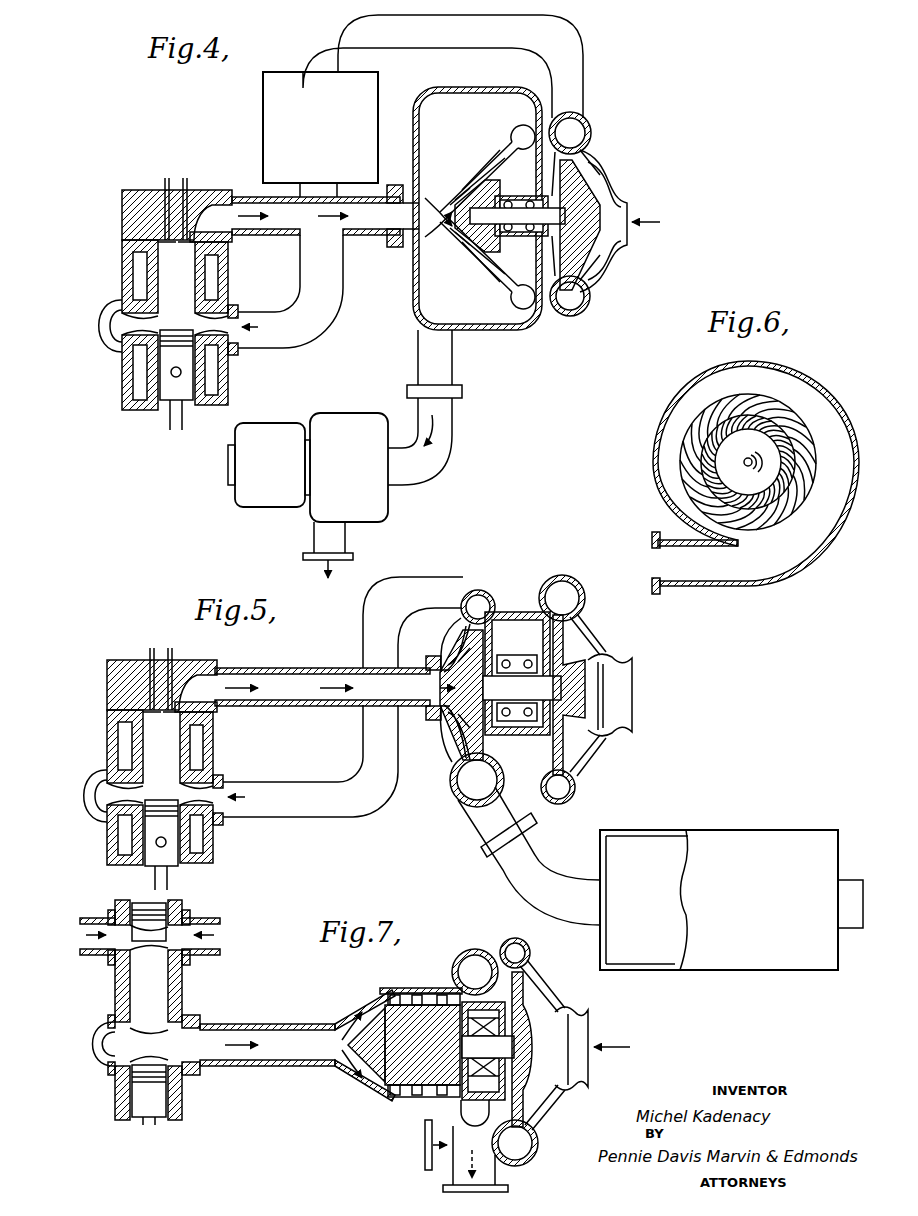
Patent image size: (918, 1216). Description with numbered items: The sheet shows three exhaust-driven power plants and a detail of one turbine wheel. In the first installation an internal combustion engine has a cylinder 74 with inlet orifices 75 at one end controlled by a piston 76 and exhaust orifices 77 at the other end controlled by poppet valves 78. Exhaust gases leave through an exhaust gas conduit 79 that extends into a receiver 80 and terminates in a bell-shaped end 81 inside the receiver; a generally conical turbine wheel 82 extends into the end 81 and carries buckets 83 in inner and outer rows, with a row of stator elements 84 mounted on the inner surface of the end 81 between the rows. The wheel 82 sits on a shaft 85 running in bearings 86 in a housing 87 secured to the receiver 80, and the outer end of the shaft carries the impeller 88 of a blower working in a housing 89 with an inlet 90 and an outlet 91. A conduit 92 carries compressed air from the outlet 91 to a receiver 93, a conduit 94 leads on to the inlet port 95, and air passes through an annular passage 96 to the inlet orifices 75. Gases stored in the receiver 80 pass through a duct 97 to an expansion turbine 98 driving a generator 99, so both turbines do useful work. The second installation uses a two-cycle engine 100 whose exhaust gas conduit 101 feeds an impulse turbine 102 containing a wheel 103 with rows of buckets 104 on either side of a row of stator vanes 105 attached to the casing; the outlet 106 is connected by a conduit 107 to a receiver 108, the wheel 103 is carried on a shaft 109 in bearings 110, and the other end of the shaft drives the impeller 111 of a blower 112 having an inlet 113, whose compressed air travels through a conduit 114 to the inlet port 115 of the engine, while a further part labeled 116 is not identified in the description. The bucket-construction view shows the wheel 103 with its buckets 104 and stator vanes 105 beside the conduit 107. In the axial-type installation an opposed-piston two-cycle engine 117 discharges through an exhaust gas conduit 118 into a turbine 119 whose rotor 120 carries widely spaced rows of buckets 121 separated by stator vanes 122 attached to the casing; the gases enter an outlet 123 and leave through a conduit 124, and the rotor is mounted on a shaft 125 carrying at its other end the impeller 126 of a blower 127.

In FIG. 4, the cylinder 74 is at (177, 303).
In FIG. 4, the inlet orifices 75 is at (140, 328).
In FIG. 4, the piston 76 is at (166, 395).
In FIG. 4, the exhaust orifices 77 is at (124, 222).
In FIG. 4, the poppet valves 78 is at (166, 183).
In FIG. 4, the exhaust gas conduit 79 is at (252, 206).
In FIG. 4, the receiver 80 is at (420, 298).
In FIG. 4, the bell-shaped end 81 is at (462, 198).
In FIG. 4, the turbine wheel 82 is at (470, 262).
In FIG. 4, the buckets 83 is at (478, 184).
In FIG. 4, the stator elements 84 is at (490, 168).
In FIG. 4, the shaft 85 is at (548, 258).
In FIG. 4, the bearings 86 is at (548, 212).
In FIG. 4, the housing 87 is at (575, 190).
In FIG. 4, the impeller 88 is at (600, 208).
In FIG. 4, the blower housing 89 is at (590, 275).
In FIG. 4, the inlet 90 is at (628, 238).
In FIG. 4, the outlet 91 is at (574, 130).
In FIG. 4, the conduit 92 is at (576, 58).
In FIG. 4, the receiver 93 is at (375, 93).
In FIG. 4, the conduit 94 is at (312, 325).
In FIG. 4, the inlet port 95 is at (238, 332).
In FIG. 4, the annular passage 96 is at (110, 318).
In FIG. 4, the duct 97 is at (398, 442).
In FIG. 4, the expansion turbine 98 is at (344, 420).
In FIG. 4, the generator 99 is at (276, 430).
In FIG. 5, the two cycle internal combustion engine 100 is at (213, 744).
In FIG. 5, the exhaust gas conduit 101 is at (302, 680).
In FIG. 5, the impulse turbine 102 is at (455, 665).
In FIG. 6, the turbine wheel 103 is at (790, 516).
In FIG. 5, the turbine wheel 103 is at (506, 645).
In FIG. 6, the buckets 104 is at (768, 412).
In FIG. 5, the buckets 104 is at (462, 736).
In FIG. 6, the stator vanes 105 is at (782, 420).
In FIG. 5, the stator vanes 105 is at (462, 748).
In FIG. 5, the outlet 106 is at (482, 592).
In FIG. 6, the conduit 107 is at (700, 560).
In FIG. 5, the conduit 107 is at (478, 835).
In FIG. 5, the receiver 108 is at (650, 842).
In FIG. 5, the shaft 109 is at (520, 722).
In FIG. 5, the bearings 110 is at (515, 660).
In FIG. 5, the impeller 111 is at (568, 690).
In FIG. 5, the blower 112 is at (578, 676).
In FIG. 5, the inlet 113 is at (625, 680).
In FIG. 5, the conduit 114 is at (552, 578).
In FIG. 5, the inlet port 115 is at (225, 805).
In FIG. 5, the duct flange 116 is at (434, 712).
In FIG. 7, the two cycle internal combustion engine 117 is at (183, 988).
In FIG. 7, the exhaust gas conduit 118 is at (280, 1040).
In FIG. 7, the turbine 119 is at (432, 988).
In FIG. 7, the rotor 120 is at (385, 1060).
In FIG. 7, the buckets 121 is at (408, 1097).
In FIG. 7, the stator vanes 122 is at (440, 1100).
In FIG. 7, the outlet 123 is at (475, 958).
In FIG. 7, the conduit 124 is at (500, 1165).
In FIG. 7, the shaft 125 is at (522, 1018).
In FIG. 7, the impeller 126 is at (540, 1022).
In FIG. 7, the blower 127 is at (545, 1092).